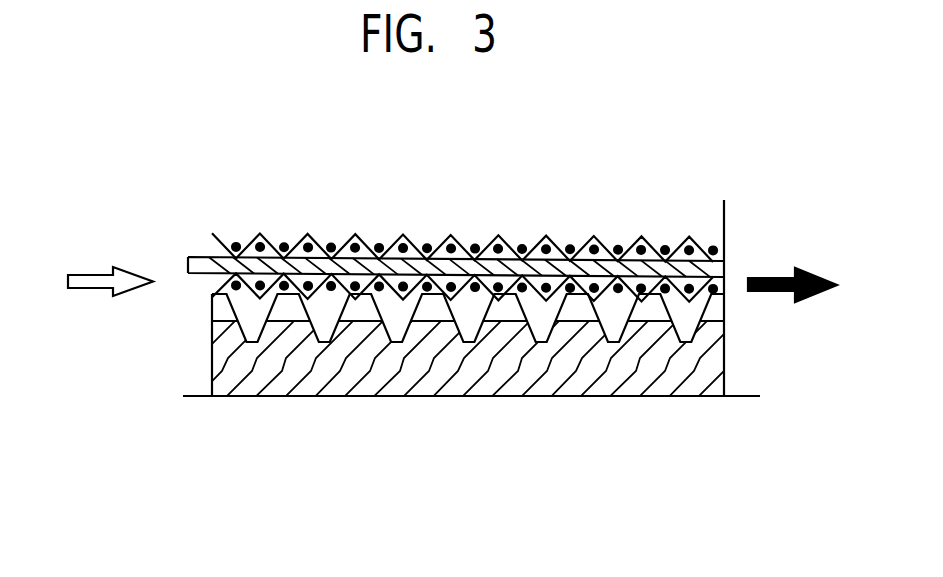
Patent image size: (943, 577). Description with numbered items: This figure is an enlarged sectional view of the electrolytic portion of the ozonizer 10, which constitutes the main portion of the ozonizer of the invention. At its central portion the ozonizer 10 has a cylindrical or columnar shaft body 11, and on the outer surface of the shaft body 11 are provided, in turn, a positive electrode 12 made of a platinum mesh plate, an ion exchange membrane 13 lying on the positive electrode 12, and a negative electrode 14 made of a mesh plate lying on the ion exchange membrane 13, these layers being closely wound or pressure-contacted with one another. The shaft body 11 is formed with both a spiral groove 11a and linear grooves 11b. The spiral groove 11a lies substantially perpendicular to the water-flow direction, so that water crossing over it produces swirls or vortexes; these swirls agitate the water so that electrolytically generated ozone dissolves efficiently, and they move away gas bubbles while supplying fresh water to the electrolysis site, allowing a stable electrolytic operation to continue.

The ozonizer 10 is at (203, 168).
The shaft body 11 is at (212, 366).
The spiral groove 11a is at (257, 322).
The linear grooves 11b is at (362, 308).
The positive electrode 12 is at (355, 283).
The ion exchange membrane 13 is at (487, 247).
The negative electrode 14 is at (643, 236).